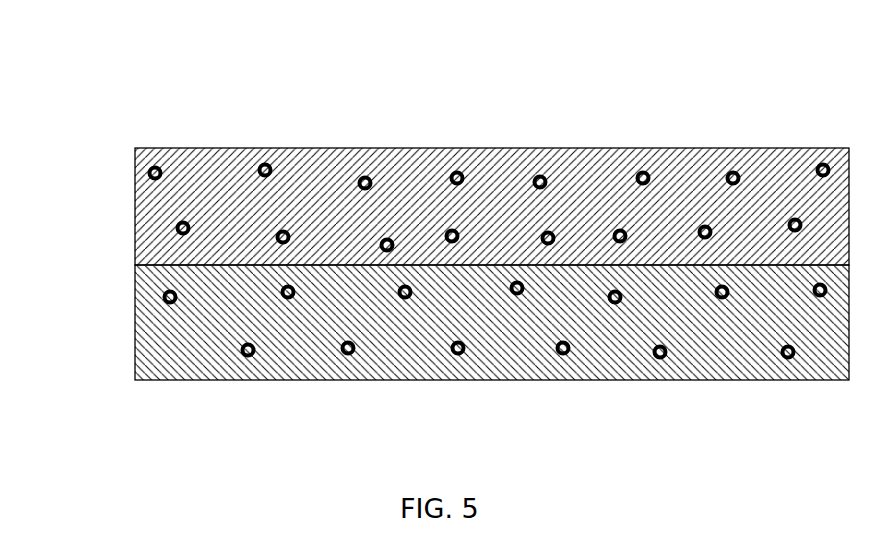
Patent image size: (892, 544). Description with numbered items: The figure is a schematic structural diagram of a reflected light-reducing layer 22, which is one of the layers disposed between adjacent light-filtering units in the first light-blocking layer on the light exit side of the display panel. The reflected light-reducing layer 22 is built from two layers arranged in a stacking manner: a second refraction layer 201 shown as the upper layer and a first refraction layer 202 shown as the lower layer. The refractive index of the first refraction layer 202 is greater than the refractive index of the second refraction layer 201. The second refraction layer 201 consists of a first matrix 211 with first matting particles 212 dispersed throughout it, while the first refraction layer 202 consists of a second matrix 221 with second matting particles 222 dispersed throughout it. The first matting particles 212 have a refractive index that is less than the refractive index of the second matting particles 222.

The reflected light-reducing layer 22 is at (172, 60).
The second refraction layer 201 is at (133, 213).
The first refraction layer 202 is at (133, 323).
The first matrix 211 is at (405, 173).
The first matting particles 212 is at (643, 171).
The second matrix 221 is at (405, 358).
The second matting particles 222 is at (662, 355).